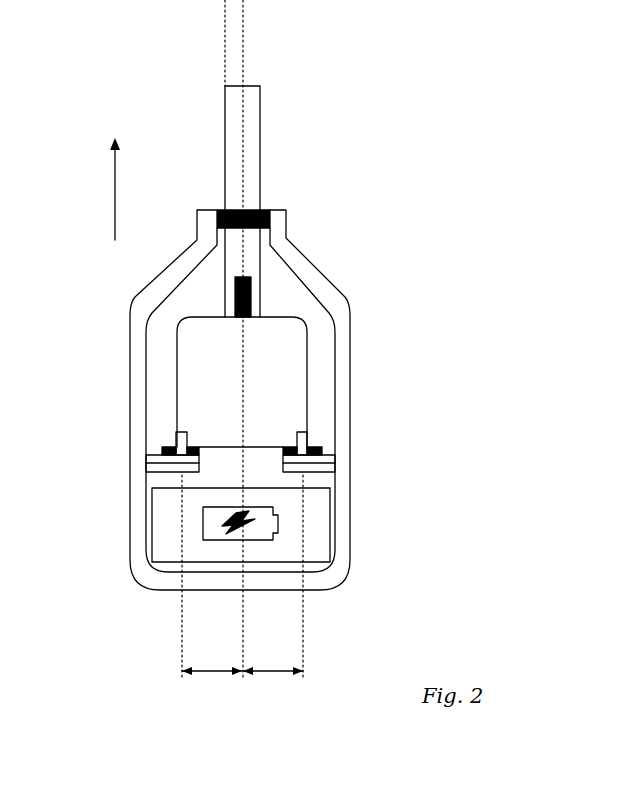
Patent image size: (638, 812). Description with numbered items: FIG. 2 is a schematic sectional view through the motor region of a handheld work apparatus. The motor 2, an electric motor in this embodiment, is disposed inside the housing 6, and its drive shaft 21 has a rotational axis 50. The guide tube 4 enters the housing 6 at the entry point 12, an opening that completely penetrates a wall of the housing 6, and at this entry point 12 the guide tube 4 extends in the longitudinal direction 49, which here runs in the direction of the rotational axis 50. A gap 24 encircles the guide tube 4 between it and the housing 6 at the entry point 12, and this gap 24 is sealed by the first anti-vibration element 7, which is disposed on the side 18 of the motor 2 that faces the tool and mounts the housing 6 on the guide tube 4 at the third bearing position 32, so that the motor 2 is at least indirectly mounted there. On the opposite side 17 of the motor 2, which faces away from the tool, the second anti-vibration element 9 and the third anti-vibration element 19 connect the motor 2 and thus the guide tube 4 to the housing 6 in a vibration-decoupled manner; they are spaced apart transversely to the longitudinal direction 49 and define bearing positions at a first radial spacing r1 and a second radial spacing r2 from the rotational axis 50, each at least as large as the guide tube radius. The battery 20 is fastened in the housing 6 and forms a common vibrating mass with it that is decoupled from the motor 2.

The motor 2 is at (195, 382).
The guide tube 4 is at (256, 147).
The housing 6 is at (343, 380).
The first anti-vibration element 7 is at (256, 209).
The second anti-vibration element 9 is at (165, 450).
The entry point 12 is at (233, 210).
The side facing away from the tool 17 is at (265, 447).
The side facing the tool 18 is at (208, 318).
The third anti-vibration element 19 is at (320, 450).
The battery 20 is at (172, 533).
The drive shaft 21 is at (252, 297).
The gap 24 is at (263, 240).
The third bearing position 32 is at (217, 210).
The longitudinal direction 49 is at (115, 205).
The rotational axis 50 is at (241, 116).
The first radial spacing r1 is at (208, 675).
The second radial spacing r2 is at (270, 675).